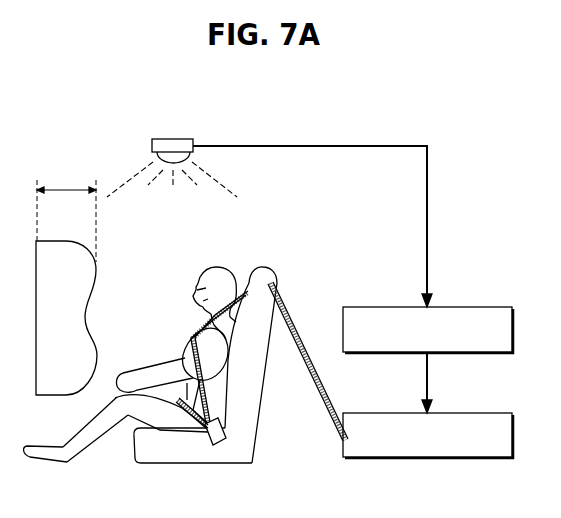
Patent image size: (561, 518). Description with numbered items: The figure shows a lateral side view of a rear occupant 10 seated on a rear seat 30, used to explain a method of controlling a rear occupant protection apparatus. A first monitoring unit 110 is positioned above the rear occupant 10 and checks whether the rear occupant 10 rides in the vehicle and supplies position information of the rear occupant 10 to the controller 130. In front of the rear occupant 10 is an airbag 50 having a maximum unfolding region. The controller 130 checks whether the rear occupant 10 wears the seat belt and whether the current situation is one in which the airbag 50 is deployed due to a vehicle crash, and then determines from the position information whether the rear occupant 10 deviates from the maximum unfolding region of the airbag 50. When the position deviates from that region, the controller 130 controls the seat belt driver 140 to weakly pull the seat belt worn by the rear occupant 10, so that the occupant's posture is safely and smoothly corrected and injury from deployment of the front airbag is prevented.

The rear occupant 10 is at (216, 266).
The rear seat 30 is at (263, 277).
The airbag 50 is at (78, 300).
The first monitoring unit 110 is at (172, 138).
The controller 130 is at (463, 307).
The seat belt driver 140 is at (463, 413).